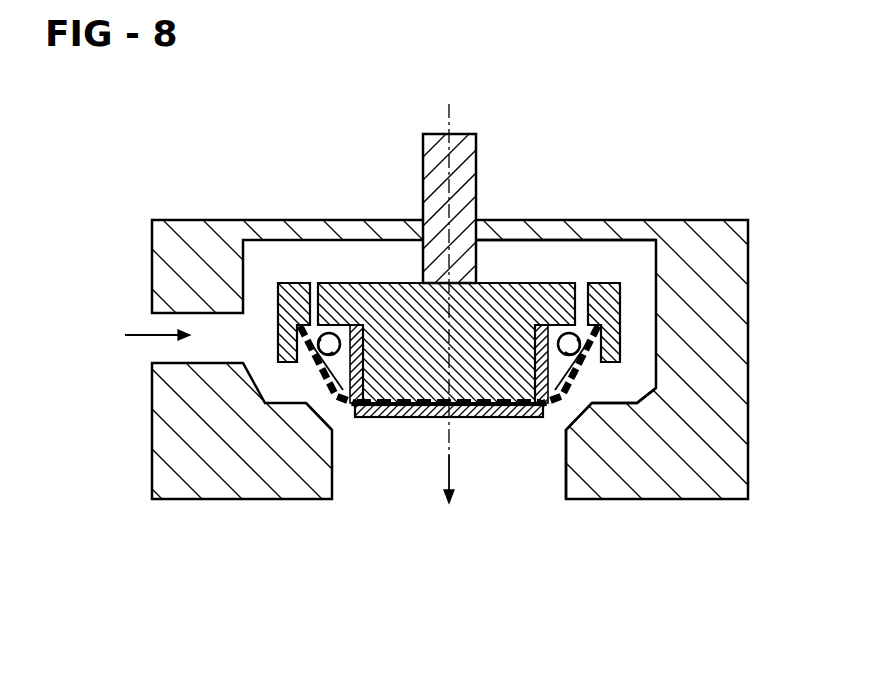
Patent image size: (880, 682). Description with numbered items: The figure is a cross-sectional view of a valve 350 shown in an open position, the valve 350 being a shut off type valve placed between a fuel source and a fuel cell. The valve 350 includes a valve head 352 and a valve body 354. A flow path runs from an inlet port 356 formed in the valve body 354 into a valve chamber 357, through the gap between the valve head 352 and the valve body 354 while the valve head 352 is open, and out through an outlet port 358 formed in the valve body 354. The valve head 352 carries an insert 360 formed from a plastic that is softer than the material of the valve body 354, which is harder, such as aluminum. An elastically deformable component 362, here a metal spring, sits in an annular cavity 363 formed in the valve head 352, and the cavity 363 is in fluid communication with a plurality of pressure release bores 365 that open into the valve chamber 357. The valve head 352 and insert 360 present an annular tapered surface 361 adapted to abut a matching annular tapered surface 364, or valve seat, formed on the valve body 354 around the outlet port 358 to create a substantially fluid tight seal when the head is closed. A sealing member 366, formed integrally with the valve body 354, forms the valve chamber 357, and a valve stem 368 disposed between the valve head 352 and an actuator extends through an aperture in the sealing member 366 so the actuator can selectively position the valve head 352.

The valve 350 is at (692, 203).
The valve head 352 is at (520, 276).
The valve body 354 is at (630, 506).
The inlet port 356 is at (185, 362).
The valve chamber 357 is at (292, 266).
The outlet port 358 is at (335, 470).
The insert 360 is at (490, 418).
The annular tapered surface 361 is at (578, 393).
The elastically deformable component 362 is at (572, 337).
The annular cavity 363 is at (318, 330).
The annular tapered surface 364 is at (338, 422).
The pressure release bores 365 is at (312, 320).
The sealing member 366 is at (486, 239).
The valve stem 368 is at (423, 176).